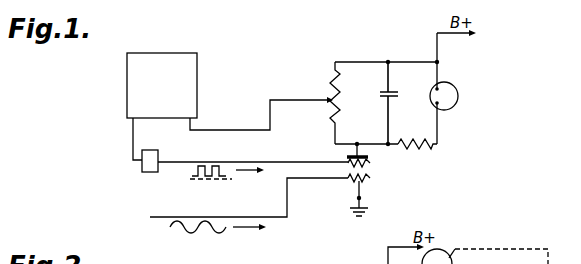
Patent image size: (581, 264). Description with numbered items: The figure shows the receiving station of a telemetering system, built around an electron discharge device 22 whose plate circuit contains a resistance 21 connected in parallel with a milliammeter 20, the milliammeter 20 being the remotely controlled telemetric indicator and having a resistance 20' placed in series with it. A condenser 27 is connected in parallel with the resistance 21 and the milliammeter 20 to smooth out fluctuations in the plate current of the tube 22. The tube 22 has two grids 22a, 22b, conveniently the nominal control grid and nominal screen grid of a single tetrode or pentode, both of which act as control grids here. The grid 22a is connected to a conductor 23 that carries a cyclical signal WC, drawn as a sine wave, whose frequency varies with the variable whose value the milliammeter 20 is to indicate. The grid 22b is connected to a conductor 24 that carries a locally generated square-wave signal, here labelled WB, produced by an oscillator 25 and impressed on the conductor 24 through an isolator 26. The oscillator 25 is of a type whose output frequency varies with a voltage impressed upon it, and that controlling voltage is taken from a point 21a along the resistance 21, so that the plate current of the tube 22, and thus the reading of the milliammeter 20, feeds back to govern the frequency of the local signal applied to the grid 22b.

The milliammeter 20 is at (467, 88).
The resistance 20' is at (436, 168).
The resistance 21 is at (335, 114).
The point along the resistance 21a is at (332, 100).
The electron discharge device 22 is at (349, 180).
The grid 22a is at (372, 180).
The grid 22b is at (371, 165).
The conductor 23 is at (288, 209).
The conductor 24 is at (290, 162).
The oscillator 25 is at (162, 85).
The isolator 26 is at (148, 173).
The condenser 27 is at (383, 92).
The pulse waveform WB is at (201, 182).
The cyclical signal Wc WC is at (195, 233).